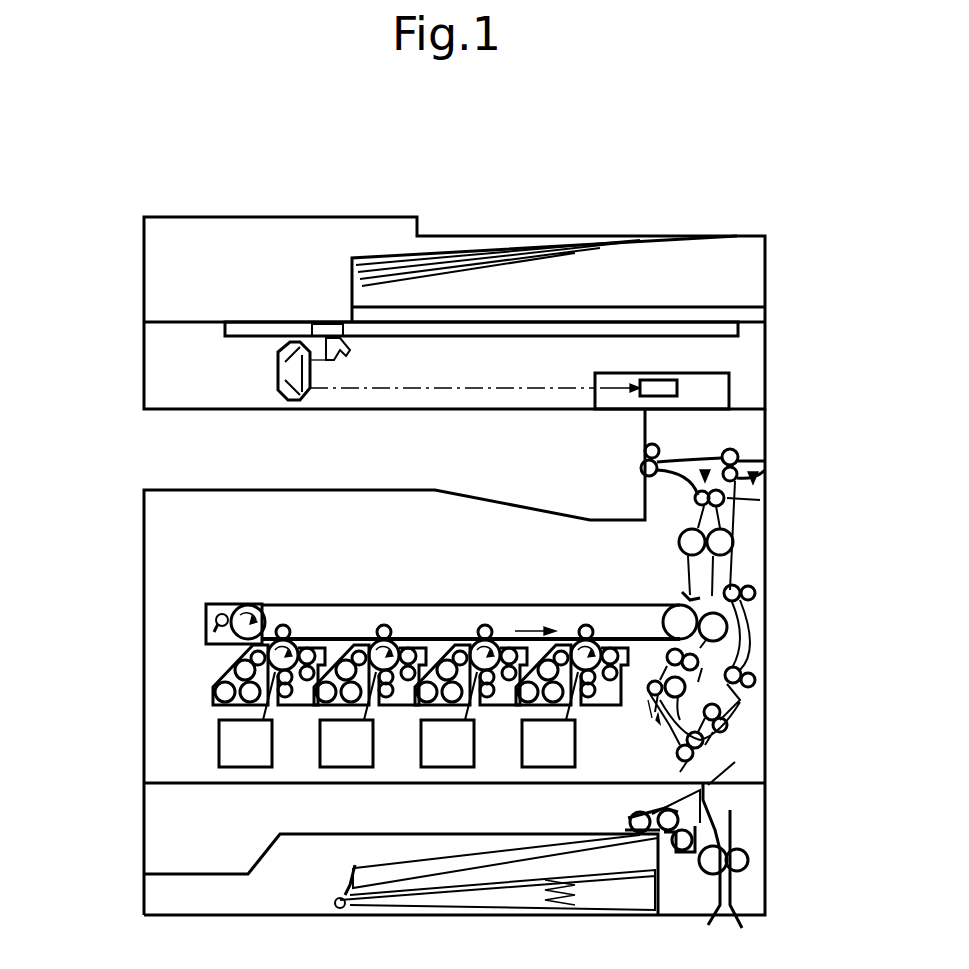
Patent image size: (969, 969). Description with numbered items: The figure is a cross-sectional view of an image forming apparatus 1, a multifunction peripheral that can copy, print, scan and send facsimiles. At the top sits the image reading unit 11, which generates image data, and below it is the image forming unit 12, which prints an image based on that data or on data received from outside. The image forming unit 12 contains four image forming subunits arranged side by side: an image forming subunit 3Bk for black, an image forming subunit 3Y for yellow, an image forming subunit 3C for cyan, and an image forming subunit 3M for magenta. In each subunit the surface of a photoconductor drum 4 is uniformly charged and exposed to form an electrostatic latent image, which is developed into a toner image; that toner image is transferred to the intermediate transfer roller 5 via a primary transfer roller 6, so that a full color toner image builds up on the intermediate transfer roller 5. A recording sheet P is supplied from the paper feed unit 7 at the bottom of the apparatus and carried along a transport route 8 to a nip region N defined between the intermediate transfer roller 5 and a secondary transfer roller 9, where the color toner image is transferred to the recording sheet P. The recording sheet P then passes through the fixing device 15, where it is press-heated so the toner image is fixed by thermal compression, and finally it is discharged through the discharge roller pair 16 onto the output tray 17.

The image forming apparatus 1 is at (485, 152).
The image reading unit 11 is at (765, 342).
The output tray 17 is at (172, 490).
The image forming unit 12 is at (172, 580).
The intermediate transfer roller 5 is at (366, 604).
The primary transfer roller 6 is at (284, 624).
The photoconductor drum 4 is at (280, 640).
The image forming subunit for black 3Bk is at (308, 614).
The image forming subunit for yellow 3Y is at (408, 614).
The image forming subunit for cyan 3C is at (495, 614).
The image forming subunit for magenta 3M is at (598, 614).
The secondary transfer roller 9 is at (728, 624).
The discharge roller pair 16 is at (658, 449).
The fixing device 15 is at (728, 532).
The nip region N is at (700, 592).
The transport route 8 is at (735, 762).
The paper feed unit 7 is at (160, 895).
The recording sheet P is at (372, 856).